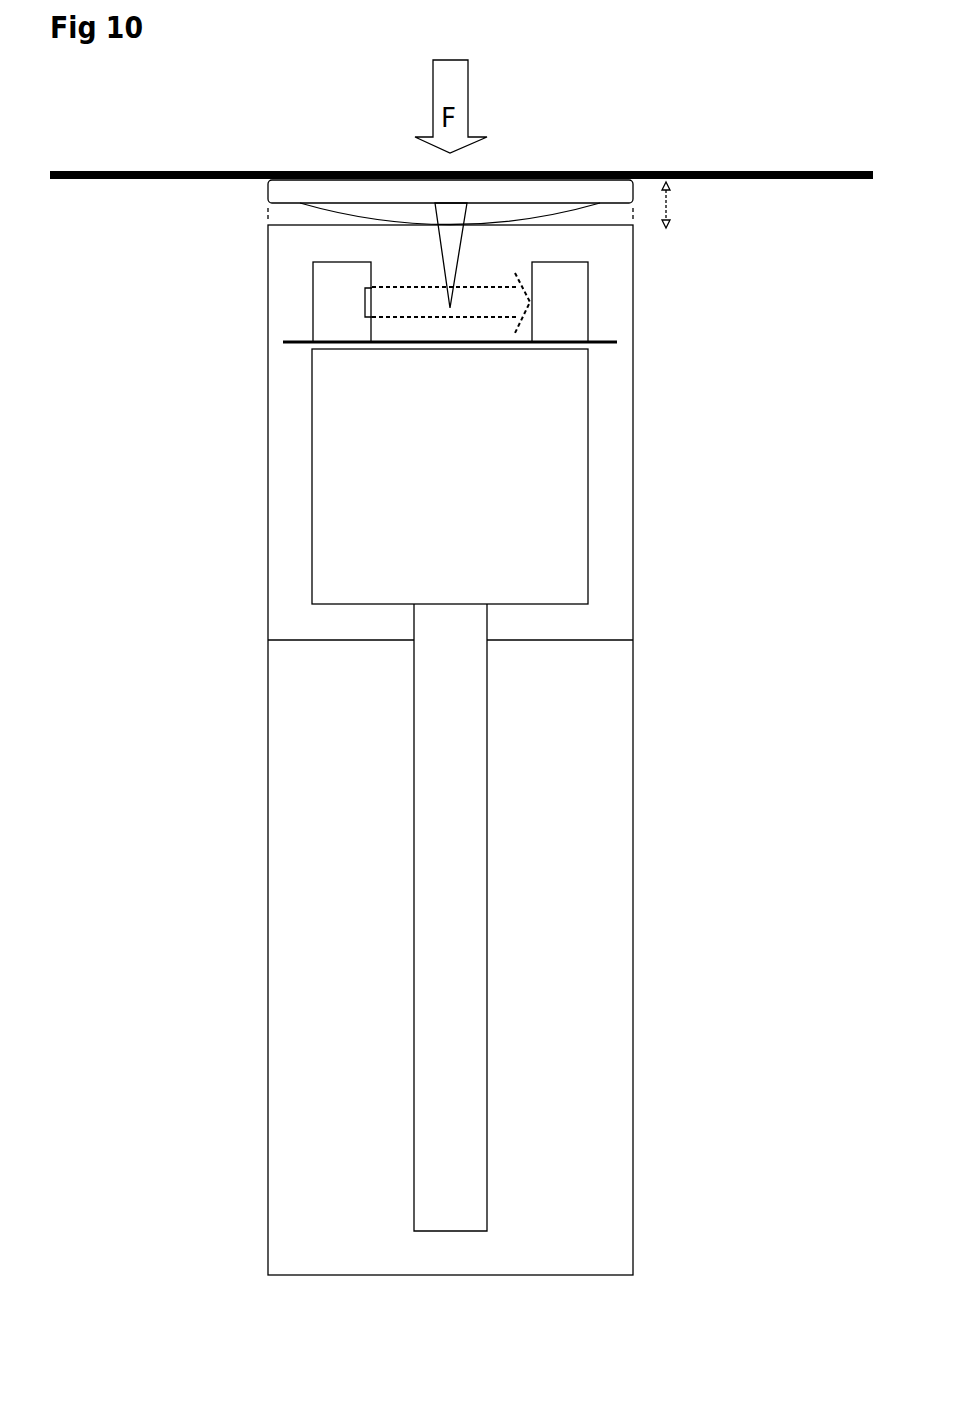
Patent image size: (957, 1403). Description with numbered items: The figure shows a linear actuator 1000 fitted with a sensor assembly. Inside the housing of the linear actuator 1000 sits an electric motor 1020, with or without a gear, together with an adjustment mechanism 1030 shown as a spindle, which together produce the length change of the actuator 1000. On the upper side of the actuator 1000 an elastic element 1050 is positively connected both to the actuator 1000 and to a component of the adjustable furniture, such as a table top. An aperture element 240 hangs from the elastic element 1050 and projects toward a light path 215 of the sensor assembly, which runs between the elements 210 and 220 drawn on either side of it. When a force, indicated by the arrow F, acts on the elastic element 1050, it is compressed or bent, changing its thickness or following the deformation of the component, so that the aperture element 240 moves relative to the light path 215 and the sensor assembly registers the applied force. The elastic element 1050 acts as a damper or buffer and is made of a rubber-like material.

The elastic element 1050 is at (267, 192).
The linear actuator 1000 is at (268, 750).
The electric motor 1020 is at (312, 508).
The adjustment mechanism 1030 is at (415, 898).
The first sensor element 210 is at (342, 302).
The second sensor element 220 is at (560, 302).
The light path 215 is at (447, 303).
The aperture element 240 is at (462, 247).